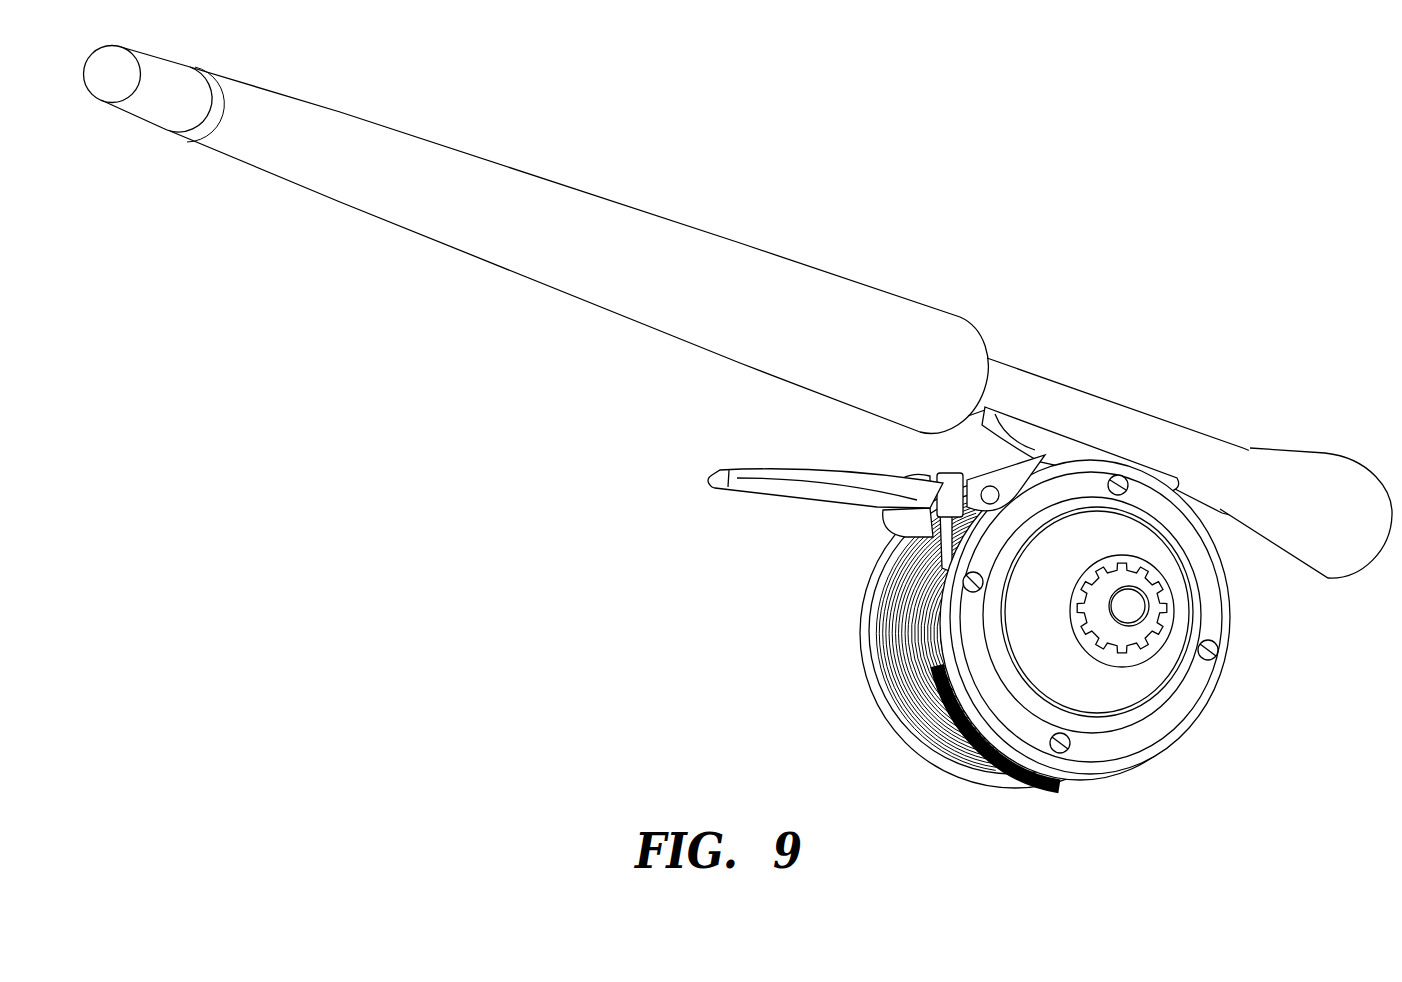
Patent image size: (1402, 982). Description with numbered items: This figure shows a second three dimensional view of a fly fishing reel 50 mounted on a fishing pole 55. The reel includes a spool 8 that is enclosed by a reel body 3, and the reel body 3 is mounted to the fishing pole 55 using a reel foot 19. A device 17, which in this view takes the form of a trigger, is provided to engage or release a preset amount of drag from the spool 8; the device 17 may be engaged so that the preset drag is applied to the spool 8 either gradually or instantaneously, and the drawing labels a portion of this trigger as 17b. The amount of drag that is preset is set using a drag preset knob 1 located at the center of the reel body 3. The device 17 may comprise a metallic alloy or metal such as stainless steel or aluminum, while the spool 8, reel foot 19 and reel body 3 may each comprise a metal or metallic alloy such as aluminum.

The fishing pole 55 is at (811, 285).
The reel foot 19 is at (1063, 445).
The device 17 is at (763, 438).
The lever arm 17b is at (787, 486).
The fly fishing reel 50 is at (698, 621).
The spool 8 is at (862, 655).
The reel body 3 is at (1119, 745).
The drag preset knob 1 is at (1134, 603).